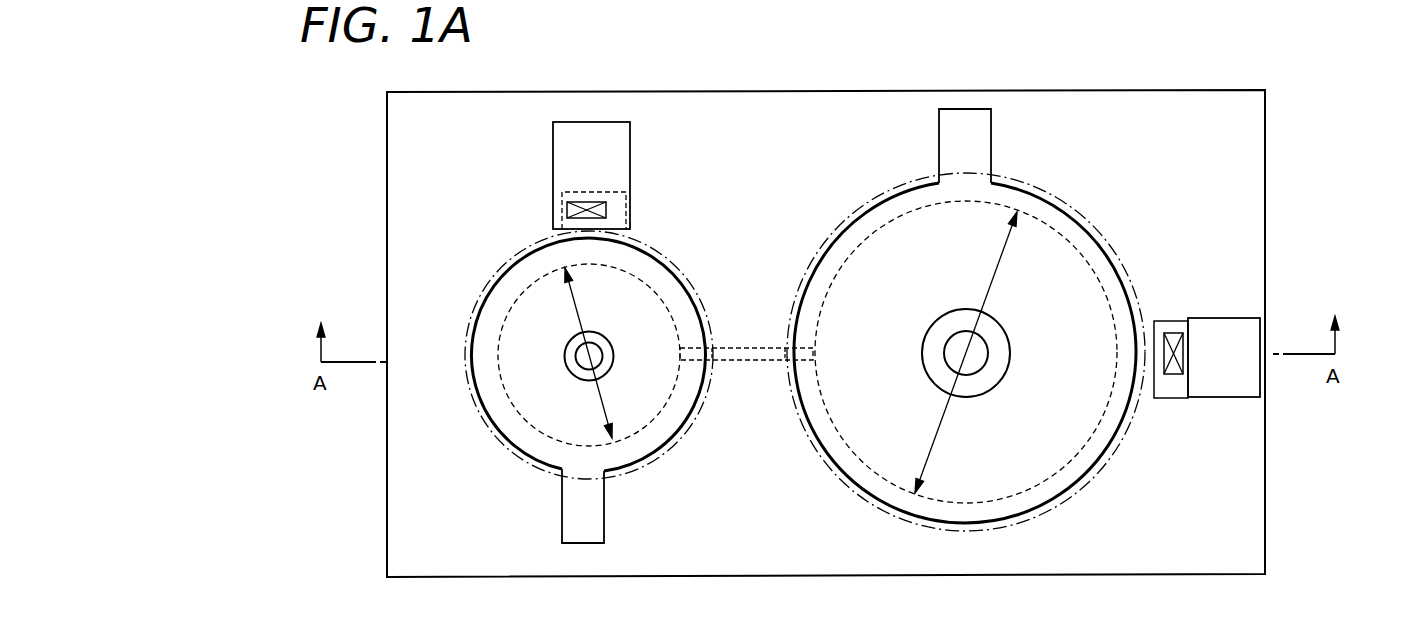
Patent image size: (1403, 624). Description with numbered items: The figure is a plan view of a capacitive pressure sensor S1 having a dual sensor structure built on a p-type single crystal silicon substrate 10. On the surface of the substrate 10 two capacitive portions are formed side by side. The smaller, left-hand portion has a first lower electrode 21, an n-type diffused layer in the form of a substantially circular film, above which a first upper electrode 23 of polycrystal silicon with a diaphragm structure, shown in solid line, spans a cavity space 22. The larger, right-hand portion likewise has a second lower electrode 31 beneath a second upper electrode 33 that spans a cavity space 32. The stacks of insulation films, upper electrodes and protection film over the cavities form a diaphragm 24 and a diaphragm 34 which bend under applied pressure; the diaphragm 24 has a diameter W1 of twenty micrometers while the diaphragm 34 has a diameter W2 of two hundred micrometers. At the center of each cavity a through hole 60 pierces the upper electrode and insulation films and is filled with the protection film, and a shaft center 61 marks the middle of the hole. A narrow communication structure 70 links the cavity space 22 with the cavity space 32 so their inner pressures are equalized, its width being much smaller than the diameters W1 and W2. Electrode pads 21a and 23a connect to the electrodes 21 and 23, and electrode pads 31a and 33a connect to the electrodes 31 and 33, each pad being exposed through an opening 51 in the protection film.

The capacitive pressure sensor S1 is at (372, 110).
The single crystal silicon substrate 10 is at (1267, 467).
The first lower electrode 21 is at (492, 278).
The lower electrode pad 21a is at (553, 134).
The cavity space 22 is at (545, 275).
The first upper electrode 23 is at (480, 320).
The upper electrode pad 23a is at (562, 522).
The diaphragm 24 is at (540, 356).
The opening 51 is at (567, 202).
The through hole 60 is at (769, 429).
The shaft center 61 is at (575, 370).
The diameter of the first diaphragm W1 is at (605, 402).
The communication structure 70 is at (745, 348).
The second lower electrode 31 is at (1077, 210).
The lower electrode pad 31a is at (1188, 320).
The cavity space 32 is at (1034, 216).
The second upper electrode 33 is at (1113, 258).
The upper electrode pad 33a is at (976, 135).
The diaphragm 34 is at (1048, 415).
The diameter of the second diaphragm W2 is at (943, 417).